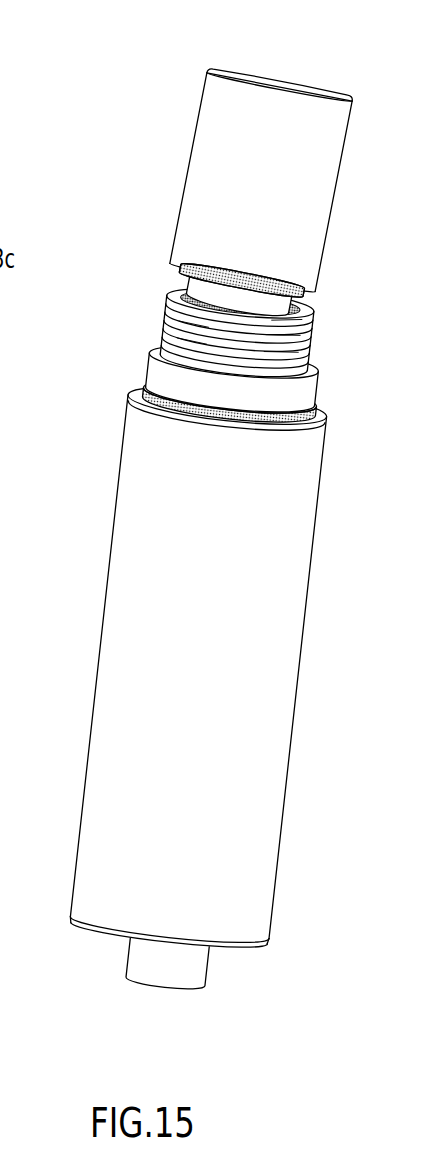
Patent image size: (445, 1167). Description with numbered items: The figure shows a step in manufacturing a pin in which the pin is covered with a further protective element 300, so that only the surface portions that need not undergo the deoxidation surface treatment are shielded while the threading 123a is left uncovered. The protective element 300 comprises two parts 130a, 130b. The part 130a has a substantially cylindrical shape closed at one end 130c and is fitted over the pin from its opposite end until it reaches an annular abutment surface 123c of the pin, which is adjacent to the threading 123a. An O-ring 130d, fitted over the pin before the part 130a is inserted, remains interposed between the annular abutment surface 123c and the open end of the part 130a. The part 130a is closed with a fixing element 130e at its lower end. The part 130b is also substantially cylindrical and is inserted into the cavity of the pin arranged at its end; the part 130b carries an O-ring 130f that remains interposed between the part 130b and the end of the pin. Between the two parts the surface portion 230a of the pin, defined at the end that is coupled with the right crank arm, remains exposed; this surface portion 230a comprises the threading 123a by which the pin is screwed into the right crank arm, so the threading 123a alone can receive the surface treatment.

The protective element 300 is at (225, 162).
The part 130b is at (306, 117).
The O-ring 130f is at (180, 266).
The threading 123a is at (229, 324).
The surface portion 230a is at (150, 325).
The annular abutment surface 123c is at (336, 417).
The O-ring 130d is at (196, 400).
The part 130a is at (190, 650).
The closed end 130c is at (296, 916).
The fixing element 130e is at (158, 962).